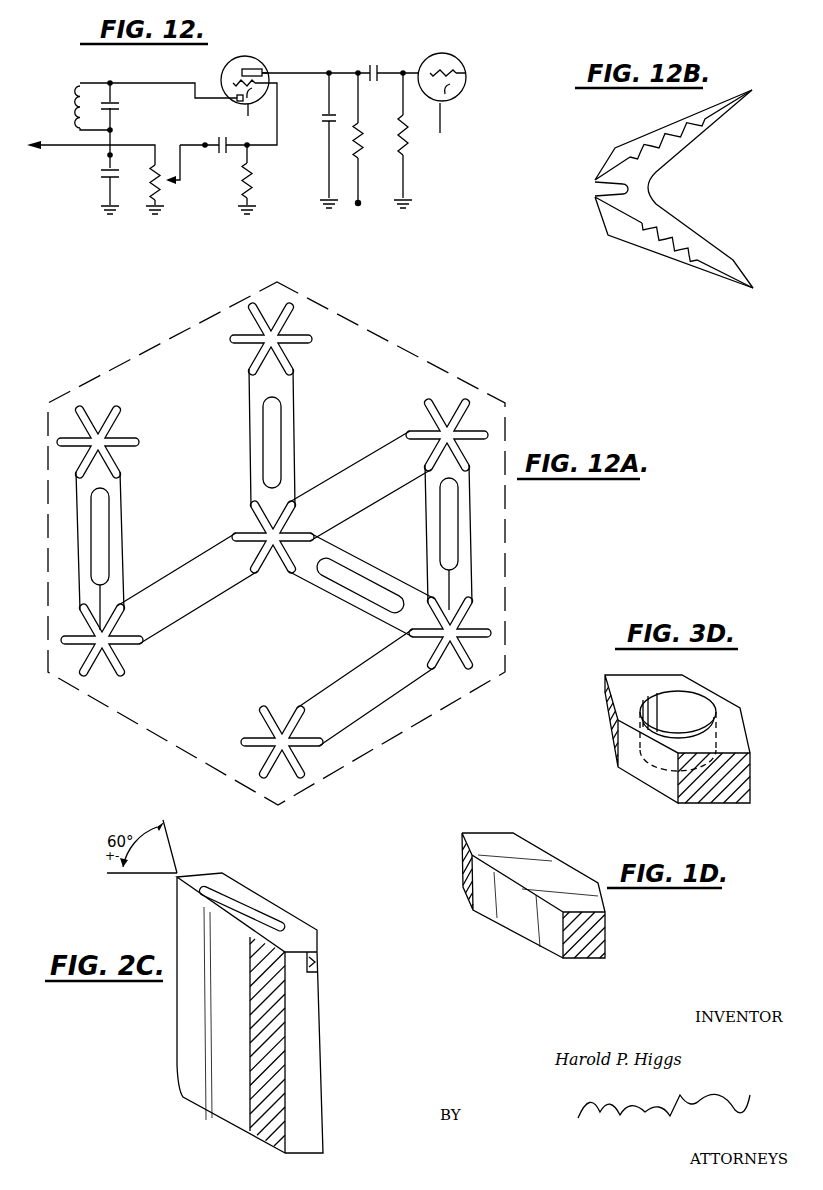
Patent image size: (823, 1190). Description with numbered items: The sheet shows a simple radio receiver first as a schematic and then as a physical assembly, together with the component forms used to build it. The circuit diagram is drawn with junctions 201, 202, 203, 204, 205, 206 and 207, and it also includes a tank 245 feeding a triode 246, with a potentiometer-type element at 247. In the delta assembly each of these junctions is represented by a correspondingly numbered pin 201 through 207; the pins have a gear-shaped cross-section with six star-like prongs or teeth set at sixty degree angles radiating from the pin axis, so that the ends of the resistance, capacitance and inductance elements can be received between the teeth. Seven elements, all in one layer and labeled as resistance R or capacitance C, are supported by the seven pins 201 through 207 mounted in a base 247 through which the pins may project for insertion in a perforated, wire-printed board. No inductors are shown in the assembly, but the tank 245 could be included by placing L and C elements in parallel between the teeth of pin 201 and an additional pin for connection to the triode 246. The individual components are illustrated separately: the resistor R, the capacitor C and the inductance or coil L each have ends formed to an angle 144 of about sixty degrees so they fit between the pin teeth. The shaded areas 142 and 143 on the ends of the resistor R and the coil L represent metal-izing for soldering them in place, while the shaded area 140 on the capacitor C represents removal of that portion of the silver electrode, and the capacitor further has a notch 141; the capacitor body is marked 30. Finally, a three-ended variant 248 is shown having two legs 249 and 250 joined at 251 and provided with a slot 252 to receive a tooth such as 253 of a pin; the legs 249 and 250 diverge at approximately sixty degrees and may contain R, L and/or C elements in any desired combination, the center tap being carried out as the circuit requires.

In FIG. 12, the junction / pin 201 is at (108, 156).
In FIG. 12A, the junction / pin 201 is at (252, 349).
In FIG. 12, the junction / pin 202 is at (206, 143).
In FIG. 12A, the junction / pin 202 is at (108, 450).
In FIG. 12, the junction / pin 203 is at (250, 148).
In FIG. 12A, the junction / pin 203 is at (118, 650).
In FIG. 12, the junction / pin 204 is at (331, 71).
In FIG. 12A, the junction / pin 204 is at (447, 652).
In FIG. 12, the junction / pin 205 is at (362, 207).
In FIG. 12A, the junction / pin 205 is at (308, 745).
In FIG. 12, the junction / pin 206 is at (408, 50).
In FIG. 12A, the junction / pin 206 is at (442, 417).
In FIG. 12, the junction / pin 207 is at (108, 214).
In FIG. 12A, the junction / pin 207 is at (258, 530).
In FIG. 12, the tank 245 is at (66, 108).
In FIG. 12, the triode 246 is at (228, 78).
In FIG. 12, the base 247 is at (168, 190).
In FIG. 12A, the base 247 is at (411, 727).
In FIG. 12B, the three-ended variant 248 is at (567, 246).
In FIG. 12B, the leg 249 is at (706, 147).
In FIG. 12B, the leg 250 is at (720, 252).
In FIG. 12B, the junction of legs 251 is at (650, 193).
In FIG. 12B, the slot 252 is at (600, 189).
In FIG. 12A, the tooth 253 is at (236, 747).
In FIG. 12B, the angle 144 is at (753, 92).
In FIG. 3D, the angle 144 is at (608, 695).
In FIG. 1D, the angle 144 is at (474, 813).
In FIG. 2C, the angle 144 is at (180, 898).
In FIG. 3D, the shaded area 143 is at (722, 790).
In FIG. 1D, the shaded area 142 is at (587, 931).
In FIG. 2C, the notch 141 is at (310, 957).
In FIG. 2C, the shaded area 140 is at (253, 1130).
In FIG. 2C, the plate 30 is at (200, 1110).
In FIG. 12A, the capacitance / capacitor C is at (118, 542).
In FIG. 2C, the capacitance / capacitor C is at (250, 898).
In FIG. 12A, the resistance / resistor R is at (206, 548).
In FIG. 1D, the resistance / resistor R is at (518, 917).
In FIG. 3D, the inductance / coil L is at (651, 773).